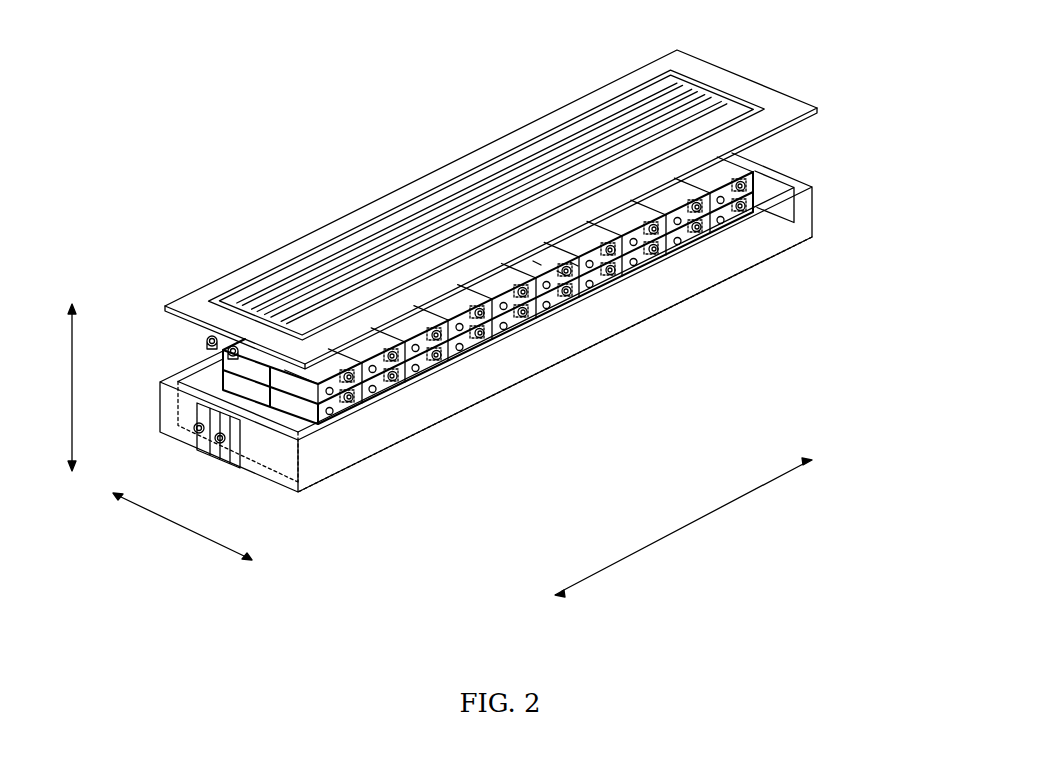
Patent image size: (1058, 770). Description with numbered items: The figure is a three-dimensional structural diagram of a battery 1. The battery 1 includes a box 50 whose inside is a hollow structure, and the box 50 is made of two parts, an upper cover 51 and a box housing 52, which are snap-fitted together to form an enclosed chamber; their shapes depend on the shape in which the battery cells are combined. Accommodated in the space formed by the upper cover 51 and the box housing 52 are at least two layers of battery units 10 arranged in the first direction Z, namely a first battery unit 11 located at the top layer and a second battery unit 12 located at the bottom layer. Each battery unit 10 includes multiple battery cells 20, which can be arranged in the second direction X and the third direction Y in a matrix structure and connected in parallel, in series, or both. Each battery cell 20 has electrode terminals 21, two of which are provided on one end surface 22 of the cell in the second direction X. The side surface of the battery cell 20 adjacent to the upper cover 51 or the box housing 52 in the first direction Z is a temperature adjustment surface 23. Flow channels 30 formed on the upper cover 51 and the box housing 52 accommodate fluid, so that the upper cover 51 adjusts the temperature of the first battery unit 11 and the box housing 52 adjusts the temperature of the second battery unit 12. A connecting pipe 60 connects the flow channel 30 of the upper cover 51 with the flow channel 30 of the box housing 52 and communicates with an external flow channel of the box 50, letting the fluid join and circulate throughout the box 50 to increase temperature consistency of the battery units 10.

The battery 1 is at (322, 46).
The battery unit 10 is at (439, 502).
The first battery unit 11 is at (310, 396).
The second battery unit 12 is at (296, 424).
The battery cell 20 is at (614, 409).
The electrode terminal 21 is at (575, 265).
The end surface 22 is at (562, 273).
The temperature adjustment surface 23 is at (538, 262).
The flow channel 30 is at (281, 305).
The box 50 is at (873, 19).
The upper cover 51 is at (723, 78).
The box housing 52 is at (765, 223).
The connecting pipe 60 is at (237, 462).